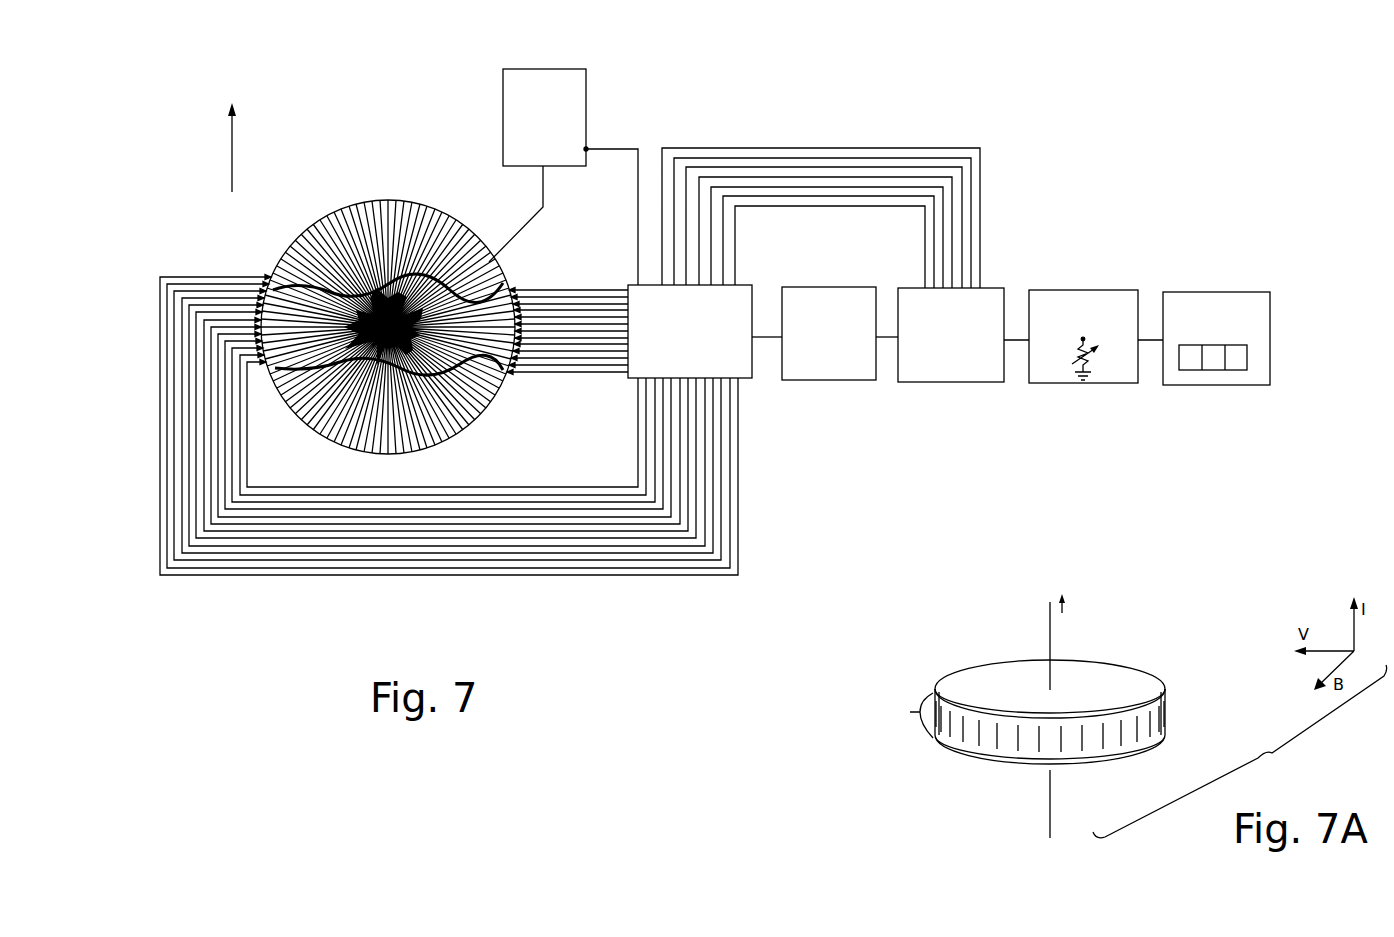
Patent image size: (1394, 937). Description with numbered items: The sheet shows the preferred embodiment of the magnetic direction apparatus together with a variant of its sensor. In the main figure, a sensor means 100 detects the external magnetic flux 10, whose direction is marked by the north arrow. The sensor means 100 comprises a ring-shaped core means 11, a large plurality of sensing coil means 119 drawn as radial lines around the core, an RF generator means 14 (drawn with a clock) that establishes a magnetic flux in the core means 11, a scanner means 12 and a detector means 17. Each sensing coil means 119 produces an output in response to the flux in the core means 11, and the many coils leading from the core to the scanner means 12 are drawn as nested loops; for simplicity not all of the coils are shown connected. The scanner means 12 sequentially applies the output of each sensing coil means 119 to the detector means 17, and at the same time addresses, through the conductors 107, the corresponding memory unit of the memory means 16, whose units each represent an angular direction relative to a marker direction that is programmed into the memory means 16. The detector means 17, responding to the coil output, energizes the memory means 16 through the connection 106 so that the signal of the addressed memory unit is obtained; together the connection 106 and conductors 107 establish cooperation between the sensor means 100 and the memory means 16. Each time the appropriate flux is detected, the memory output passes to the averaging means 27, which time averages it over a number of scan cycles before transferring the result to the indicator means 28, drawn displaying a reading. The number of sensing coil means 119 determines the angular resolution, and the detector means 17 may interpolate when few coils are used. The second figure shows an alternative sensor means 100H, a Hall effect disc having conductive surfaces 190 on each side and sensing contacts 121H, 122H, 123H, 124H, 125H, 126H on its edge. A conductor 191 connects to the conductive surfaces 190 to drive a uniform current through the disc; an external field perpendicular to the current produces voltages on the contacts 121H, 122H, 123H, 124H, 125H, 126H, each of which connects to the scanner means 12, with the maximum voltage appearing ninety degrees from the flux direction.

In FIG. 7, the external magnetic flux 10 is at (234, 150).
In FIG. 7, the sensing coil means 119 is at (458, 184).
In FIG. 7, the RF generator means 14 is at (587, 122).
In FIG. 7, the core means 11 is at (512, 273).
In FIG. 7, the sensor means 100 is at (627, 230).
In FIG. 7, the conductors 107 is at (880, 214).
In FIG. 7, the scanner means 12 is at (632, 383).
In FIG. 7, the detector means 17 is at (814, 287).
In FIG. 7, the connection 106 is at (888, 338).
In FIG. 7, the memory means 16 is at (958, 383).
In FIG. 7, the averaging means 27 is at (1100, 290).
In FIG. 7, the indicator means 28 is at (1228, 292).
In FIG. 7A, the conductor 191 is at (1048, 633).
In FIG. 7A, the sensor means 100H is at (1115, 680).
In FIG. 7A, the sensing contact 121H is at (1165, 720).
In FIG. 7A, the sensing contact 122H is at (1140, 738).
In FIG. 7A, the sensing contact 123H is at (1093, 752).
In FIG. 7A, the sensing contact 124H is at (1055, 740).
In FIG. 7A, the sensing contact 125H is at (1010, 745).
In FIG. 7A, the sensing contact 126H is at (968, 735).
In FIG. 7A, the conductive surfaces 190 is at (910, 712).